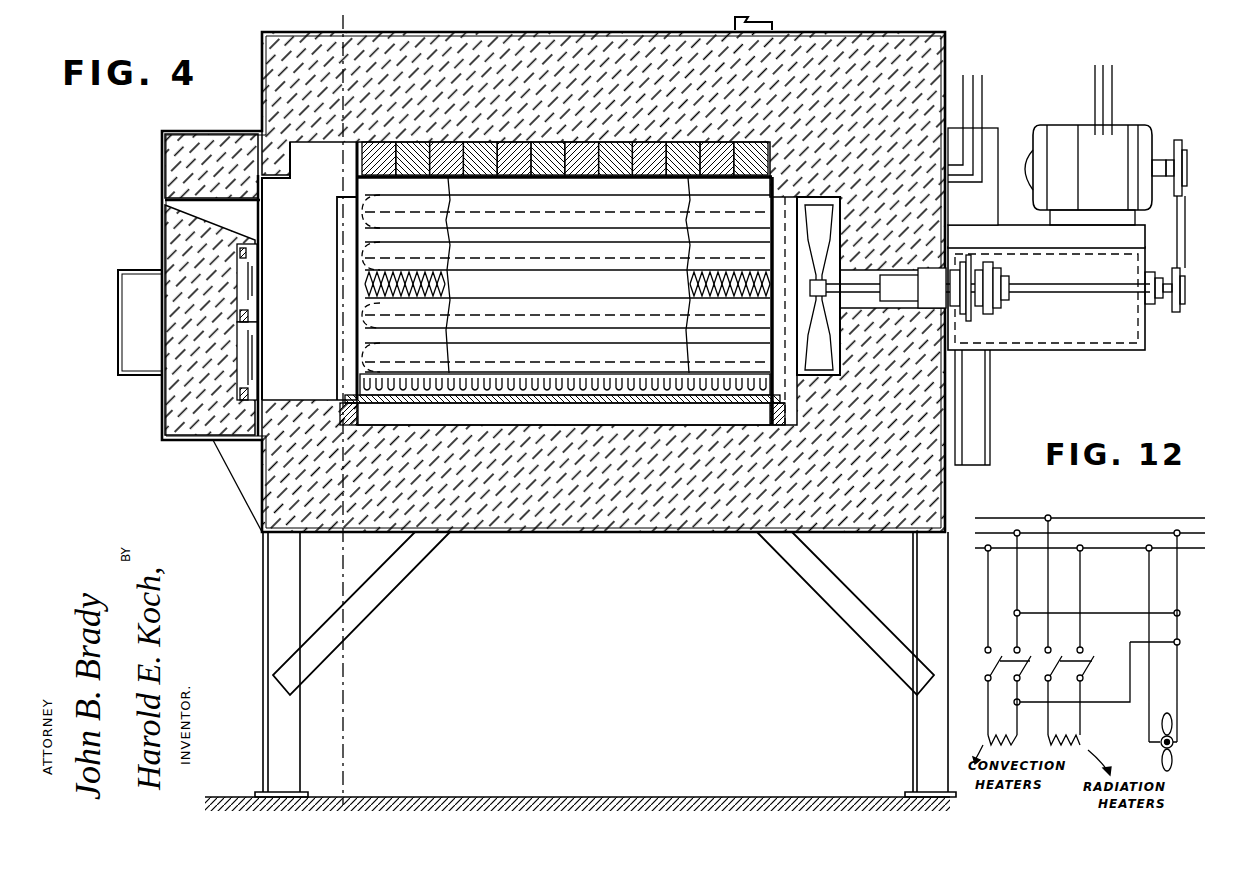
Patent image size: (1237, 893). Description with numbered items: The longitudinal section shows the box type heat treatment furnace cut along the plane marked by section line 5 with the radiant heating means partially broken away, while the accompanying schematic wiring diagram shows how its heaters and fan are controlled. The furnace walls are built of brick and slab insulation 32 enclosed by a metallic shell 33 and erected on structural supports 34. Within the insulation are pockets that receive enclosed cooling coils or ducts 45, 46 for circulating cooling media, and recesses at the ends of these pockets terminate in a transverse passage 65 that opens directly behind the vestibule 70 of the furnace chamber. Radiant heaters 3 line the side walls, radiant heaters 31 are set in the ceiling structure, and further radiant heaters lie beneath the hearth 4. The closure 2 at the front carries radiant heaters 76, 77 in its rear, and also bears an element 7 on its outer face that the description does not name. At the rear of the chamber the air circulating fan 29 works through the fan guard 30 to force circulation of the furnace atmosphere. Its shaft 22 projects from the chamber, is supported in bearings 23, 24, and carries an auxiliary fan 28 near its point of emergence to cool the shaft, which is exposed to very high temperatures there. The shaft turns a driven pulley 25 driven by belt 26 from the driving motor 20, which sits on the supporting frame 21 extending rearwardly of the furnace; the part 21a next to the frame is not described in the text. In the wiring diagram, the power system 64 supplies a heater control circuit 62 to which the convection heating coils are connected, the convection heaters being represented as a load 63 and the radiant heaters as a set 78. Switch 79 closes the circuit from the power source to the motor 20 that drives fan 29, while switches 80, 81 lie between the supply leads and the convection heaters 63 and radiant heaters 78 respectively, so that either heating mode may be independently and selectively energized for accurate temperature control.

In FIG. 4, the closure 2 is at (195, 398).
In FIG. 4, the radiant heaters 3 is at (678, 342).
In FIG. 4, the hearth 4 is at (445, 405).
In FIG. 4, the section line 5— 5 is at (315, 22).
In FIG. 4, the door handle 7 is at (135, 325).
In FIG. 4, the driving motor 20 is at (1128, 135).
In FIG. 12, the driving motor 20 is at (1172, 735).
In FIG. 4, the supporting frame 21 is at (1010, 235).
In FIG. 4, the wiring conduit 21a is at (998, 148).
In FIG. 4, the shaft 22 is at (975, 330).
In FIG. 4, the bearing 23 is at (1010, 302).
In FIG. 4, the bearing 24 is at (1148, 318).
In FIG. 4, the driven pulley 25 is at (1186, 280).
In FIG. 4, the belt 26 is at (1184, 240).
In FIG. 4, the auxiliary fan 28 is at (972, 260).
In FIG. 4, the air circulating fan 29 is at (826, 348).
In FIG. 12, the air circulating fan 29 is at (1175, 760).
In FIG. 4, the fan guard 30 is at (822, 275).
In FIG. 4, the radiant heaters 31 is at (488, 186).
In FIG. 4, the brick and slab insulation 32 is at (627, 60).
In FIG. 4, the metallic shell 33 is at (488, 48).
In FIG. 4, the structural supports 34 is at (340, 605).
In FIG. 4, the cooling coil or duct 45 is at (538, 158).
In FIG. 4, the cooling coil or duct 46 is at (547, 385).
In FIG. 12, the heater control circuit 62 is at (1000, 622).
In FIG. 12, the convection heaters 63 is at (1005, 728).
In FIG. 12, the power system 64 is at (1000, 512).
In FIG. 4, the transverse passage 65 is at (340, 252).
In FIG. 4, the vestibule 70 is at (325, 233).
In FIG. 4, the radiant heater 76 is at (256, 283).
In FIG. 4, the radiant heater 77 is at (256, 357).
In FIG. 12, the radiant heaters 78 is at (1070, 730).
In FIG. 12, the switch 79 is at (1180, 642).
In FIG. 12, the switch 80 is at (1003, 658).
In FIG. 12, the switch 81 is at (1095, 656).